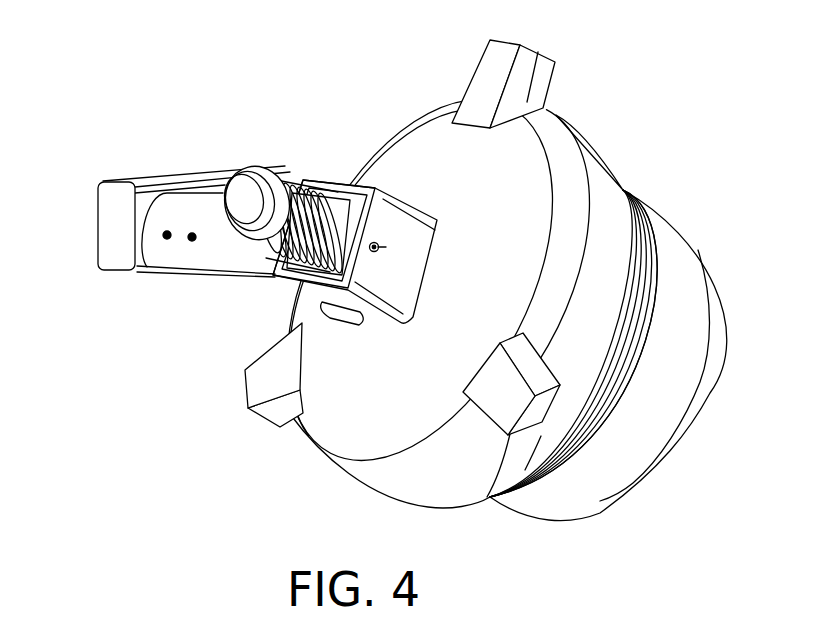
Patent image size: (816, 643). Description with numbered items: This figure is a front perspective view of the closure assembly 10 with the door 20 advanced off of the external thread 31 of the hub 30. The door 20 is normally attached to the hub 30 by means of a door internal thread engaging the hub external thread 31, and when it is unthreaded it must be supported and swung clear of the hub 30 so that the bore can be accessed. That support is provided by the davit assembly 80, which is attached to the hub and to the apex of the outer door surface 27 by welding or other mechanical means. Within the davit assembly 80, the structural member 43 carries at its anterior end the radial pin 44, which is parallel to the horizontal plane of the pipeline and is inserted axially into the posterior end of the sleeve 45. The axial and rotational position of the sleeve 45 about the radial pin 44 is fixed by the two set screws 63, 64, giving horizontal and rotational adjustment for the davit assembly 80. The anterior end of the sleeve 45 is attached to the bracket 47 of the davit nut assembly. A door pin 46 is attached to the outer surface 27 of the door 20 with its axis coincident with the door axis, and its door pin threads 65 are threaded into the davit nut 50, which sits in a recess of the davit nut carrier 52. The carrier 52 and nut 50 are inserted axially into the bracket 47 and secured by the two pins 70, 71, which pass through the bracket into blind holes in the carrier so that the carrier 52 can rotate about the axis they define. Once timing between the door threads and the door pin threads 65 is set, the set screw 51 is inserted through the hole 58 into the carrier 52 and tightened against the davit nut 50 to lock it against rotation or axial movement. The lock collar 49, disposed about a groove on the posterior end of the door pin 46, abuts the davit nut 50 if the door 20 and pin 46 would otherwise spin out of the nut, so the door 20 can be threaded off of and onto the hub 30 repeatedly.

The closure assembly 10 is at (290, 462).
The door 20 is at (437, 282).
The door surface 27 is at (617, 123).
The hub 30 is at (637, 487).
The hub external thread 31 is at (647, 203).
The structural member 43 is at (102, 233).
The radial pin 44 is at (142, 275).
The sleeve 45 is at (189, 253).
The door pin 46 is at (227, 178).
The bracket 47 is at (290, 297).
The lock collar 49 is at (233, 172).
The davit nut 50 is at (308, 180).
The set screw 51 is at (386, 247).
The davit nut carrier 52 is at (337, 180).
The hole 58 is at (410, 252).
The set screw 63 is at (165, 243).
The set screw 64 is at (193, 243).
The door pin threads 65 is at (273, 185).
The pin 70 is at (362, 318).
The pin 71 is at (375, 258).
The davit assembly 80 is at (73, 85).